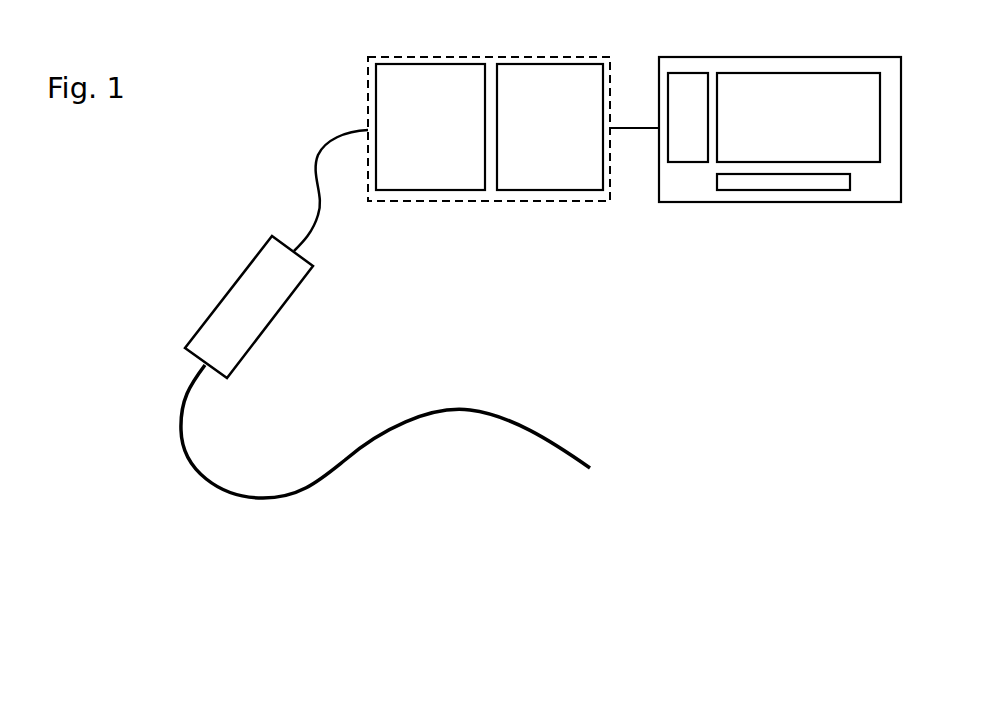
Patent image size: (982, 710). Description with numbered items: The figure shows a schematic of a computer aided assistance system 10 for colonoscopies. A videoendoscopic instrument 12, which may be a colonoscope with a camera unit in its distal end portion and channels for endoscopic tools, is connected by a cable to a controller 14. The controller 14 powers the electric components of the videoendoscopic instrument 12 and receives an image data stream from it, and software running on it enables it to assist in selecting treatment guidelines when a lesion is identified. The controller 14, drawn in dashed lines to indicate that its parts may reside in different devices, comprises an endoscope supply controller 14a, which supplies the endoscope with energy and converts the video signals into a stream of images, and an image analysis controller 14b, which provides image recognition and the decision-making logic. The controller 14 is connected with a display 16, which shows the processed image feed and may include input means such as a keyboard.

The computer aided assistance system 10 is at (695, 390).
The videoendoscopic instrument 12 is at (203, 323).
The controller 14 is at (437, 55).
The endoscope supply controller 14a is at (460, 144).
The image analysis controller 14b is at (579, 144).
The display 16 is at (695, 202).